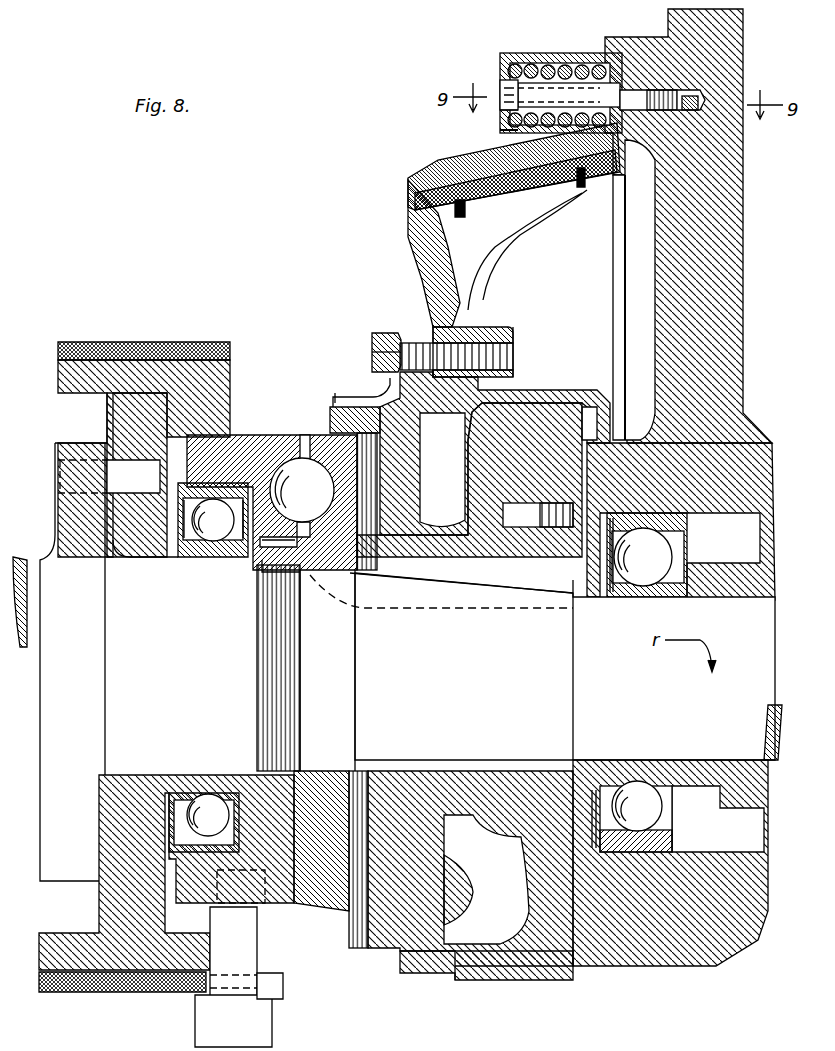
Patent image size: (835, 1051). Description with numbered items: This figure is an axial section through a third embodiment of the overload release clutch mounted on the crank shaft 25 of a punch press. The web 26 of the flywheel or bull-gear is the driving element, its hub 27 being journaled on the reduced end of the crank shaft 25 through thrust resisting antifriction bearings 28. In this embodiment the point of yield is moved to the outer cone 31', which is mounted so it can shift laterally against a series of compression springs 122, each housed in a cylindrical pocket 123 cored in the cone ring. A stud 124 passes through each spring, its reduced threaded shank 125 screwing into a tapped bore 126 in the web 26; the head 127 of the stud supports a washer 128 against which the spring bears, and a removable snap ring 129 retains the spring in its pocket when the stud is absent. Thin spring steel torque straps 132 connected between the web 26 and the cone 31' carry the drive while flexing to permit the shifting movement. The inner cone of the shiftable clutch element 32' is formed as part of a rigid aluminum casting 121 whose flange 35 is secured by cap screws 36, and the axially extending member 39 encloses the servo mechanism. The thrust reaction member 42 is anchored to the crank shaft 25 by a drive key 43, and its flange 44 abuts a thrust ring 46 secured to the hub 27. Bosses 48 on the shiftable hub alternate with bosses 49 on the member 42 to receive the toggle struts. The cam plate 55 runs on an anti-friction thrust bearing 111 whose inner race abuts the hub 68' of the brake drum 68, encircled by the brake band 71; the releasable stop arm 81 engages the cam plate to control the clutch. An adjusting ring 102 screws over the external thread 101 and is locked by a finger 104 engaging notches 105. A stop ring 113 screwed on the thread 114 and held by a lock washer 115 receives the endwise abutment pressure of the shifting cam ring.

The crank shaft 25 is at (47, 662).
The web portion of the flywheel 26 is at (720, 184).
The hub portion 27 is at (740, 463).
The thrust resisting antifriction bearings 28 is at (652, 553).
The female cone 31' is at (491, 166).
The shiftable clutch element 32' is at (516, 230).
The radially extending flange 35 is at (463, 333).
The cap screws 36 is at (376, 346).
The axially extending member 39 is at (552, 392).
The thrust reaction member 42 is at (547, 557).
The drive key 43 is at (518, 600).
The radially extending flange 44 is at (535, 968).
The thrust ring 46 is at (574, 950).
The lugs or bosses 48 is at (473, 892).
The lugs or bosses 49 is at (490, 507).
The cam plate 55 is at (240, 447).
The brake drum 68 is at (163, 647).
The hub of the brake drum 68' is at (145, 573).
The brake band 71 is at (105, 343).
The releasable stop arm 81 is at (228, 995).
The external thread 101 is at (312, 907).
The adjusting ring 102 is at (332, 415).
The locking finger 104 is at (352, 405).
The notches 105 is at (337, 404).
The anti-friction thrust bearing 111 is at (207, 540).
The stop ring 113 is at (280, 586).
The thread 114 is at (265, 697).
The lock washer 115 is at (268, 548).
The aluminum casting 121 is at (430, 270).
The compression springs 122 is at (570, 57).
The cylindrical pocket 123 is at (537, 64).
The stud 124 is at (515, 80).
The reduced threaded shank 125 is at (675, 93).
The tapped bore 126 is at (695, 113).
The head 127 is at (510, 82).
The washer 128 is at (513, 113).
The snap ring 129 is at (500, 135).
The torque straps 132 is at (640, 150).